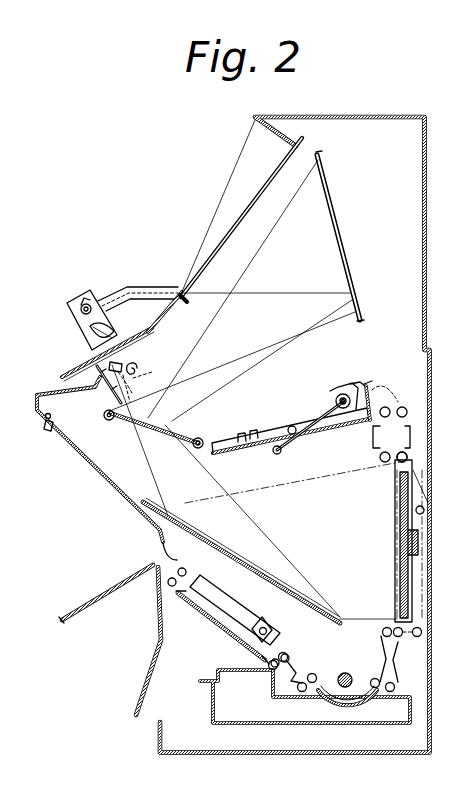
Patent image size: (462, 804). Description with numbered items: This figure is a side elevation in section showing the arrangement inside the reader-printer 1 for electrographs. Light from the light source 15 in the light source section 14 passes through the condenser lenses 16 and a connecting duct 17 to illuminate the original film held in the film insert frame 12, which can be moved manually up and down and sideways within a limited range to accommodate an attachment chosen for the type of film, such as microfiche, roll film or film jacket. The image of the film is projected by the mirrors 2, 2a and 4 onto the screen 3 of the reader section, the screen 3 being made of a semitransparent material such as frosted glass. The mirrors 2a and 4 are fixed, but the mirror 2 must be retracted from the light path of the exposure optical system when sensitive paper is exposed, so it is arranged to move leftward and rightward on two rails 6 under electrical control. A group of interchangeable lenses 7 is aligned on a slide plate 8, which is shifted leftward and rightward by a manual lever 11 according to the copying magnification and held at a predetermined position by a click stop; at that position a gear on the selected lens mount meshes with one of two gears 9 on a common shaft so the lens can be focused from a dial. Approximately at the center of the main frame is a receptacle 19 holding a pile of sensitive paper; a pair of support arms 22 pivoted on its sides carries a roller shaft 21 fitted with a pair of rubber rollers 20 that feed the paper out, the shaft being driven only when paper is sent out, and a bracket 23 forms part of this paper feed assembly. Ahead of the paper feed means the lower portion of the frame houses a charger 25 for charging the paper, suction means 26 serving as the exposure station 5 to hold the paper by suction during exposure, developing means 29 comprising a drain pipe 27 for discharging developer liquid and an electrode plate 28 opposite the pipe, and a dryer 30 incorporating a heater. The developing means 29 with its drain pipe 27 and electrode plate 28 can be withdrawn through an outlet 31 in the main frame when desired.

The reader-printer 1 is at (427, 233).
The mirror 2 is at (171, 436).
The mirror 2a is at (332, 219).
The screen 3 is at (268, 187).
The mirror 4 is at (219, 526).
The exposure station 5 is at (392, 529).
The rails 6 is at (109, 421).
The interchangeable lenses 7 is at (125, 363).
The slide plate 8 is at (46, 416).
The gears 9 is at (40, 394).
The manual lever 11 is at (49, 432).
The film insert frame 12 is at (68, 372).
The light source section 14 is at (72, 302).
The light source 15 is at (84, 300).
The condenser lenses 16 is at (89, 330).
The light tube 17 is at (144, 288).
The receptacle 19 is at (262, 436).
The rubber rollers 20 is at (343, 394).
The roller shaft 21 is at (334, 397).
The support arms 22 is at (282, 451).
The bracket 23 is at (361, 385).
The charger 25 is at (376, 446).
The suction means 26 is at (412, 547).
The drain pipe 27 is at (345, 675).
The electrode plate 28 is at (342, 712).
The developing means 29 is at (234, 721).
The dryer 30 is at (240, 603).
The outlet 31 is at (152, 712).